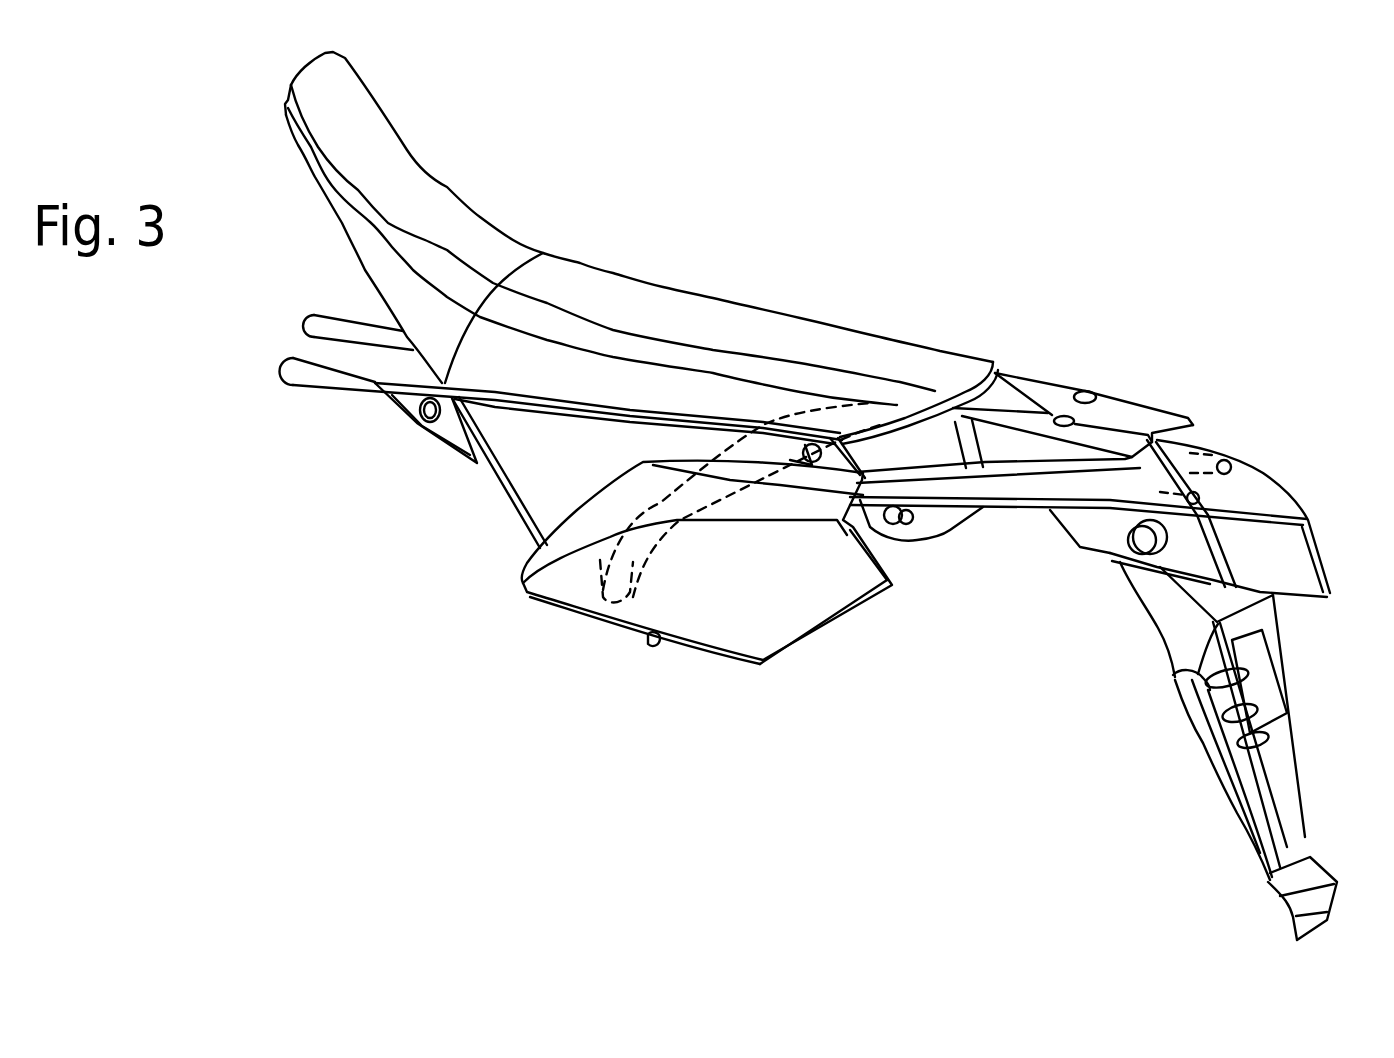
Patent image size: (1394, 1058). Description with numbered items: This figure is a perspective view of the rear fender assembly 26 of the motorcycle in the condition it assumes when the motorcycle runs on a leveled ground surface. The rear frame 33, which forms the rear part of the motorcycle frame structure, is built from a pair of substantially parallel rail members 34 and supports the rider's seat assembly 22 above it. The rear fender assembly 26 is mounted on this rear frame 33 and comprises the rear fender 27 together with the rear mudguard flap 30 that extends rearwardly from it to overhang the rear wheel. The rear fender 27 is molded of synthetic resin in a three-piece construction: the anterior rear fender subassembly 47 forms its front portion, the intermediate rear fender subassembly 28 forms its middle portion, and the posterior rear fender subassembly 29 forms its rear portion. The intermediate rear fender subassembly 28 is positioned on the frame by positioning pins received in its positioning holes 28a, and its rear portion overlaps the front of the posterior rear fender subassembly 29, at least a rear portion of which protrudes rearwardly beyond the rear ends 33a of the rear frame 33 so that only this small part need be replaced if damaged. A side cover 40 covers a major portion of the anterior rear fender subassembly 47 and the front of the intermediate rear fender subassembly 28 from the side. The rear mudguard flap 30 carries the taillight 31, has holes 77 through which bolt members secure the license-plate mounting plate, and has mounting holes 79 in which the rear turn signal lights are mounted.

The rider's seat assembly 22 is at (727, 315).
The rear fender assembly 26 is at (1187, 448).
The rear fender 27 is at (1187, 448).
The intermediate rear fender subassembly 28 is at (1167, 403).
The positioning holes 28a is at (1061, 416).
The posterior rear fender subassembly 29 is at (1287, 458).
The rear mudguard flap 30 is at (1235, 751).
The taillight 31 is at (1323, 553).
The rear frame 33 is at (325, 397).
The rear ends of the rear frame 33a is at (1207, 500).
The rail members 34 is at (368, 387).
The side cover 40 is at (765, 590).
The anterior rear fender subassembly 47 is at (628, 612).
The holes 77 is at (1273, 648).
The mounting holes 79 is at (1133, 560).